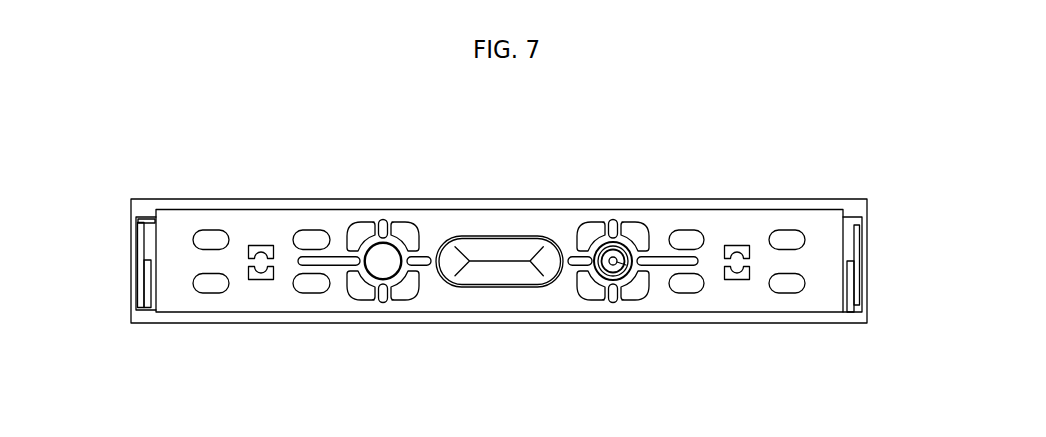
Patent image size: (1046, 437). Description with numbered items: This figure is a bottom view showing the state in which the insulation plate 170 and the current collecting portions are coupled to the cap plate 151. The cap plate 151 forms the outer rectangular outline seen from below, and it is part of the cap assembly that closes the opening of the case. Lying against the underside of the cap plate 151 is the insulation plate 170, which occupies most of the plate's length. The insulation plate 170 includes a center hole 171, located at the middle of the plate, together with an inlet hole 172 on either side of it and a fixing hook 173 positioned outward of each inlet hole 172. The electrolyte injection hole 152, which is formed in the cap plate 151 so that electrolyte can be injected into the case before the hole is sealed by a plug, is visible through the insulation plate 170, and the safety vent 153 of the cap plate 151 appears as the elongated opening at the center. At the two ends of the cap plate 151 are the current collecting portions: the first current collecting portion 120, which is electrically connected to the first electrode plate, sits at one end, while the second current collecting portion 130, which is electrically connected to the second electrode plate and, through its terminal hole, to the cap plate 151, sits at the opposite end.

The first current collecting portion 120 is at (141, 238).
The second current collecting portion 130 is at (860, 238).
The cap plate 151 is at (850, 202).
The electrolyte injection hole 152 is at (597, 279).
The safety vent 153 is at (522, 250).
The insulation plate 170 is at (673, 192).
The center hole 171 is at (458, 250).
The inlet hole 172 is at (367, 254).
The fixing hook 173 is at (261, 246).